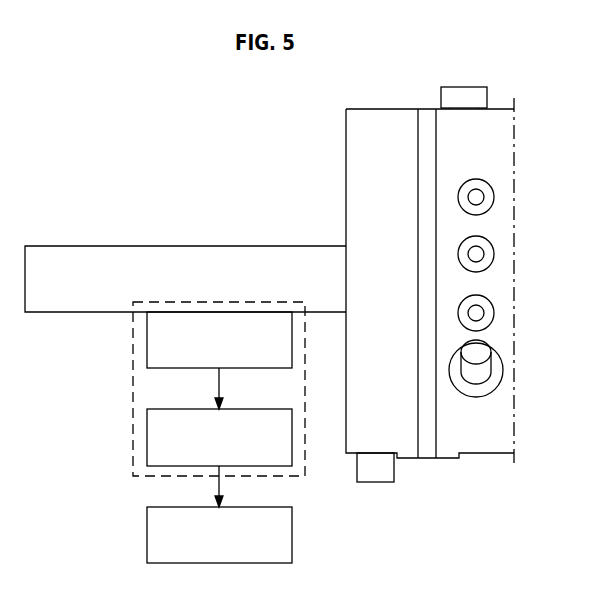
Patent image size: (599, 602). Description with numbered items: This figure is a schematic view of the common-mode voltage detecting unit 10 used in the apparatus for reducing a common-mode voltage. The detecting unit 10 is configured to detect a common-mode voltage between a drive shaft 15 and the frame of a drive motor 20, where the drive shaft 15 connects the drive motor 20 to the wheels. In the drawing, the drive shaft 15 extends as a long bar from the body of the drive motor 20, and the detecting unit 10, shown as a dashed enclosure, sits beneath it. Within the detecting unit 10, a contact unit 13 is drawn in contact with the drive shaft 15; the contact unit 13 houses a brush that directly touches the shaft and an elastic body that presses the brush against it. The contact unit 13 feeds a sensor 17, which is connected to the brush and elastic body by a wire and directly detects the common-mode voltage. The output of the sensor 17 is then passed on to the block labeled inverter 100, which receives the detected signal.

The detecting unit 10 is at (133, 405).
The contact unit 13 is at (153, 354).
The drive shaft 15 is at (89, 253).
The sensor 17 is at (153, 453).
The drive motor 20 is at (356, 135).
The inverter 100 is at (153, 536).